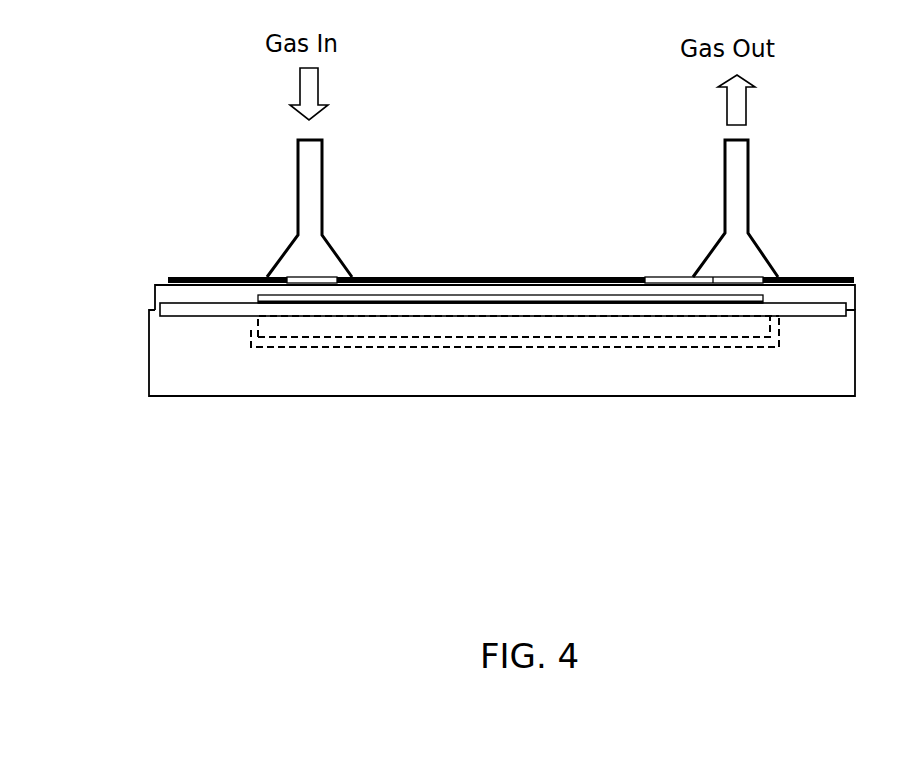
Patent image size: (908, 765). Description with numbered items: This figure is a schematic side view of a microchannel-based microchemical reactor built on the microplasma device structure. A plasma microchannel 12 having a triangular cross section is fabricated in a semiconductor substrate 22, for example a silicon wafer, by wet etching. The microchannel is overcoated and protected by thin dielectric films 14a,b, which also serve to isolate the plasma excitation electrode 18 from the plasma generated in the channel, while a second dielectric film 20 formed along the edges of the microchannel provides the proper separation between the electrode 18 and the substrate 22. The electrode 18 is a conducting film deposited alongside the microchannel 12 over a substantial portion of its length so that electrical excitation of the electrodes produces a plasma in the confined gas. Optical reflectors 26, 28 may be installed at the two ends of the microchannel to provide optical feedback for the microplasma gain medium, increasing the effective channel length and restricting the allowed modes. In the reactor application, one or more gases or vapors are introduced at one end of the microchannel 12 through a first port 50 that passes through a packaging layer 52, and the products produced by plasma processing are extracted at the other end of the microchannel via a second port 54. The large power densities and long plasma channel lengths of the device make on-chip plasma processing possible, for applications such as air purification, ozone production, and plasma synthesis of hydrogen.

The microchannel 12 is at (490, 330).
The dielectric thin films 14a,b is at (163, 295).
The plasma excitation electrode 18 is at (513, 295).
The second dielectric film 20 is at (153, 308).
The semiconductor substrate 22 is at (235, 384).
The optical reflector 26 is at (788, 327).
The optical reflector 28 is at (247, 329).
The first port 50 is at (303, 257).
The packaging layer 52 is at (642, 283).
The second port 54 is at (742, 245).